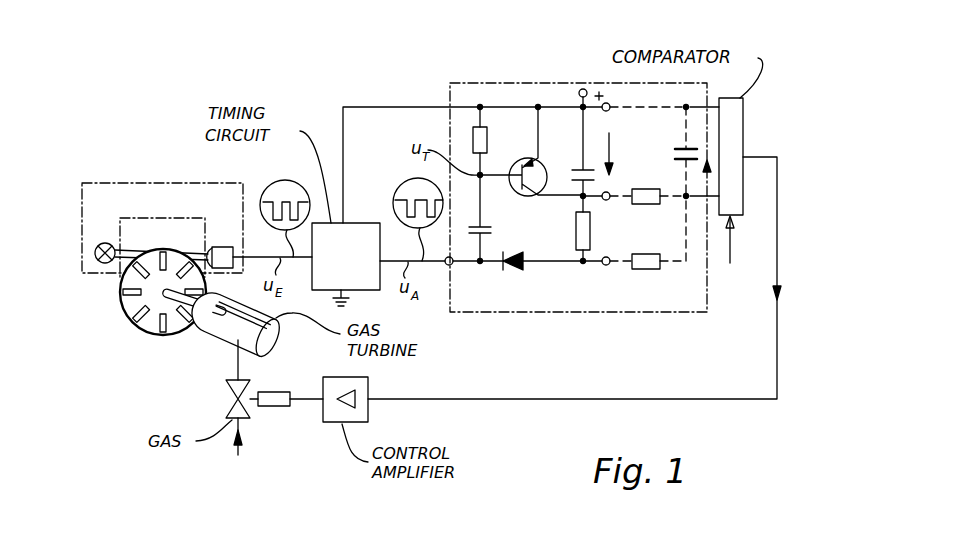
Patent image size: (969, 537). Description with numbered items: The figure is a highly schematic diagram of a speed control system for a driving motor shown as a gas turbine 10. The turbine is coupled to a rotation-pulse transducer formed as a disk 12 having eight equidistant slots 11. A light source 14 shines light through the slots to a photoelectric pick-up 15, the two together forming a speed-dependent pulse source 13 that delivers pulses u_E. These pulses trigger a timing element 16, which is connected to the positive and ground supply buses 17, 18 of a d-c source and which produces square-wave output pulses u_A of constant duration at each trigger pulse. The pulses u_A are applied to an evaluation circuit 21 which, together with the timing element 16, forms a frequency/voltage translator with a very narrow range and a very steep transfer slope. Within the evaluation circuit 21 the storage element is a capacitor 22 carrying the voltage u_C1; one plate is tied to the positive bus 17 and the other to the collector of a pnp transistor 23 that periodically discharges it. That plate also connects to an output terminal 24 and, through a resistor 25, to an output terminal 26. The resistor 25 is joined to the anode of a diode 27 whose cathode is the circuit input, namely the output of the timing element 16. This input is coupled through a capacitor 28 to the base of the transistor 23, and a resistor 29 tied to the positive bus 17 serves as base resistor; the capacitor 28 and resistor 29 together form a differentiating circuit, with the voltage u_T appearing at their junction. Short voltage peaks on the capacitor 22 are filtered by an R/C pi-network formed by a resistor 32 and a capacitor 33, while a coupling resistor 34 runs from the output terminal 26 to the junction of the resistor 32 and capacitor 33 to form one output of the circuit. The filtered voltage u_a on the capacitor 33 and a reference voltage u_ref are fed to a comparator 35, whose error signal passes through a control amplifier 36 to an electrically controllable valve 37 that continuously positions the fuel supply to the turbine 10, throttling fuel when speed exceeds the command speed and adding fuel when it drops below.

The gas turbine 10 is at (284, 347).
The slots 11 is at (160, 333).
The disk 12 is at (123, 305).
The speed-dependent pulse source 13 is at (154, 183).
The light source 14 is at (104, 243).
The photoelectric pick-up 15 is at (224, 247).
The timing element 16 is at (352, 228).
The positive supply bus 17 is at (406, 106).
The ground or reference supply bus 18 is at (352, 300).
The evaluation circuit 21 is at (544, 313).
The capacitor 22 is at (574, 170).
The pnp transistor 23 is at (527, 196).
The output terminal 24 is at (607, 201).
The resistor 25 is at (576, 241).
The output terminal 26 is at (607, 266).
The diode 27 is at (511, 268).
The capacitor 28 is at (472, 227).
The resistor 29 is at (488, 138).
The resistor 32 is at (650, 205).
The capacitor 33 is at (680, 149).
The coupling resistor 34 is at (648, 272).
The comparator 35 is at (740, 100).
The control amplifier 36 is at (365, 385).
The electrically controllable valve 37 is at (252, 407).